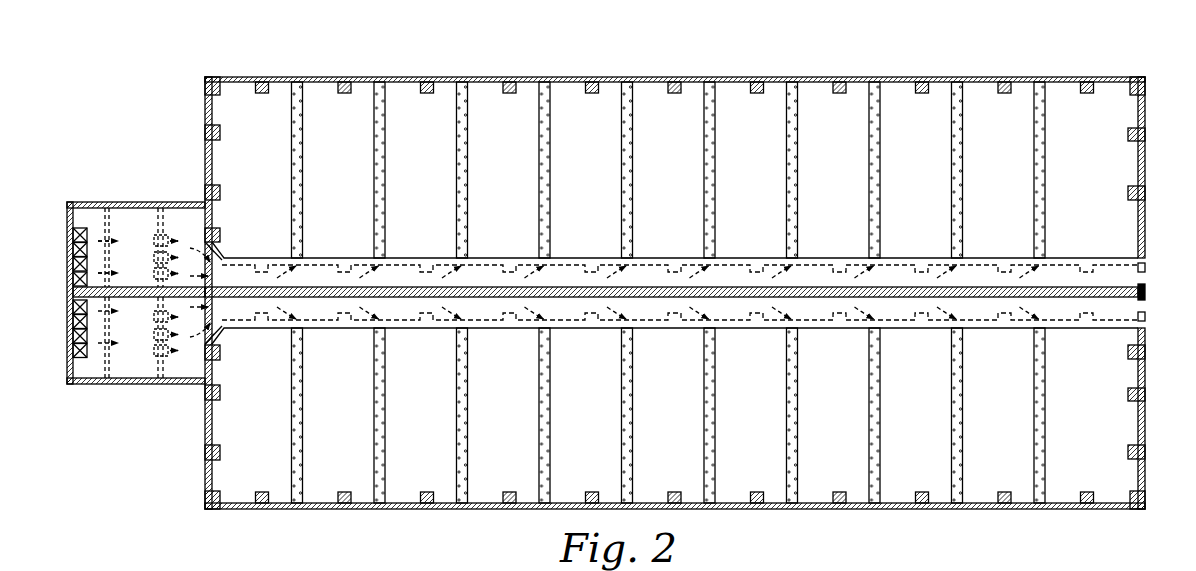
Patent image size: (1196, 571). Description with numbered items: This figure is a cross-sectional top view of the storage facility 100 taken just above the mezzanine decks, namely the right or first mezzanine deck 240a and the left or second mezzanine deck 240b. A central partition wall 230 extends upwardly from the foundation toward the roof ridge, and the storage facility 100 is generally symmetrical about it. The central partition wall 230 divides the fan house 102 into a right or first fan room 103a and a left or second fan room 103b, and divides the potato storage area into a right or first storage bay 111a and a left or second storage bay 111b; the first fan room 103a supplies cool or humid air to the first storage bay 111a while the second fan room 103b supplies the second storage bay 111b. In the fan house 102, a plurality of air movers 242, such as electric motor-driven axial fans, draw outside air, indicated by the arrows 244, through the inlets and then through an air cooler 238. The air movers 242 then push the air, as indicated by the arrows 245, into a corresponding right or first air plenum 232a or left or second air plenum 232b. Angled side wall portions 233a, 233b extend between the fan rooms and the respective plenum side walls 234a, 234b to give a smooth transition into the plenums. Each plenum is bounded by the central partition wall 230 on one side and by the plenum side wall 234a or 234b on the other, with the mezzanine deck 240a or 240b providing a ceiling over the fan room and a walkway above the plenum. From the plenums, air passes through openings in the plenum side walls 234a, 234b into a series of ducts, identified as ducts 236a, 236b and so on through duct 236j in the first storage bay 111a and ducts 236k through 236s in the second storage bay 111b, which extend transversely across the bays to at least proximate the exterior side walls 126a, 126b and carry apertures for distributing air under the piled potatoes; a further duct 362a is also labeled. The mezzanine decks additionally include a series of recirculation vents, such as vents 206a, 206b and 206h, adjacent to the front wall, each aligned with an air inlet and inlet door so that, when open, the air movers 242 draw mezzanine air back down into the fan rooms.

The storage facility 100 is at (940, 68).
The fan house 102 is at (70, 202).
The first fan room 103a is at (135, 348).
The second fan room 103b is at (182, 238).
The first storage bay 111a is at (815, 505).
The second storage bay 111b is at (568, 105).
The exterior side wall 126a is at (692, 505).
The exterior side wall 126b is at (730, 80).
The recirculation vent 206a is at (73, 352).
The recirculation vent 206b is at (73, 337).
The recirculation vent 206h is at (73, 236).
The central partition wall 230 is at (1100, 290).
The first air plenum 232a is at (320, 330).
The second air plenum 232b is at (420, 256).
The angled side wall portion 233a is at (243, 282).
The angled side wall portion 233b is at (212, 224).
The plenum side wall 234a is at (470, 332).
The plenum side wall 234b is at (570, 258).
The duct 236a is at (295, 457).
The duct 236b is at (390, 460).
The duct 236j is at (1035, 462).
The duct 236k is at (293, 105).
The duct 236s is at (1047, 125).
The air cooler 238 is at (70, 300).
The first mezzanine deck 240a is at (385, 352).
The second mezzanine deck 240b is at (888, 258).
The air movers 242 is at (155, 238).
The arrows 244 is at (106, 348).
The arrows 245 is at (482, 282).
The perforated panel 362a is at (419, 569).